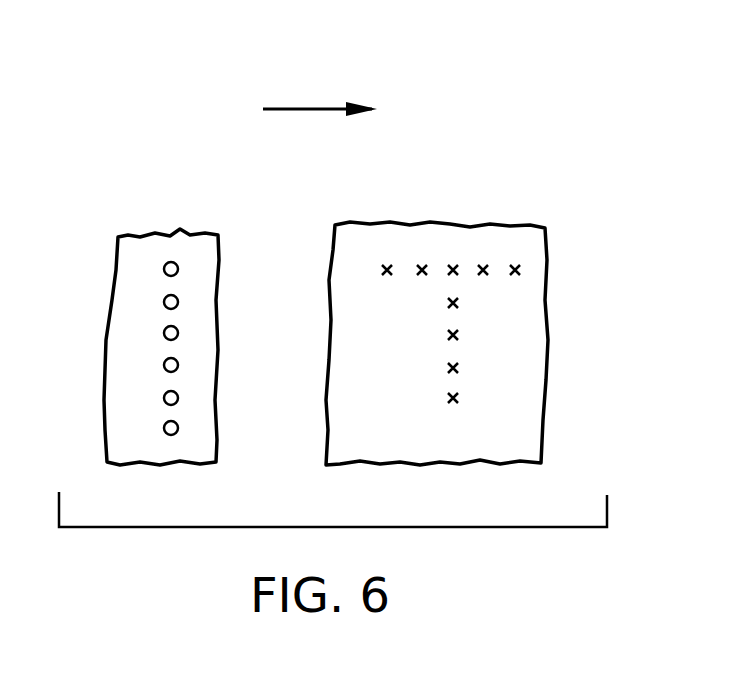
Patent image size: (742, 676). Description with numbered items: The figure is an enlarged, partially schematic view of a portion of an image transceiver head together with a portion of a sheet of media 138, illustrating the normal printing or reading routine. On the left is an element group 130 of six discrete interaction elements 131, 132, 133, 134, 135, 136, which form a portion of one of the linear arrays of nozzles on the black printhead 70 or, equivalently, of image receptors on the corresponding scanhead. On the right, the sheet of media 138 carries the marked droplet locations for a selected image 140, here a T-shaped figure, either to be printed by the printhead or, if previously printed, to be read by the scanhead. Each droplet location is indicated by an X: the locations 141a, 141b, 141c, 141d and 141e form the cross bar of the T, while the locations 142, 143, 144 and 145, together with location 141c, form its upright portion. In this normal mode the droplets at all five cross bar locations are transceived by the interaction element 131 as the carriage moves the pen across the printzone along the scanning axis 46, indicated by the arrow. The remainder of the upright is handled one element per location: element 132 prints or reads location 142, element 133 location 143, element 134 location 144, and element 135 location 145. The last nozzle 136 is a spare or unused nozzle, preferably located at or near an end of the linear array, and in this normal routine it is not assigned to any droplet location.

The scanning axis 46 is at (312, 107).
The black printhead 70 is at (205, 447).
The element group 130 is at (193, 247).
The interaction element 131 is at (178, 269).
The interaction element 132 is at (178, 302).
The interaction element 133 is at (178, 333).
The interaction element 134 is at (178, 365).
The interaction element 135 is at (178, 398).
The spare nozzle 136 is at (178, 428).
The sheet of media 138 is at (523, 437).
The selected image 140 is at (505, 212).
The droplet location 141a is at (387, 263).
The droplet location 141b is at (422, 263).
The droplet location 141c is at (454, 263).
The droplet location 141d is at (484, 263).
The droplet location 141e is at (516, 263).
The droplet location 142 is at (460, 303).
The droplet location 143 is at (460, 335).
The droplet location 144 is at (460, 368).
The droplet location 145 is at (460, 398).